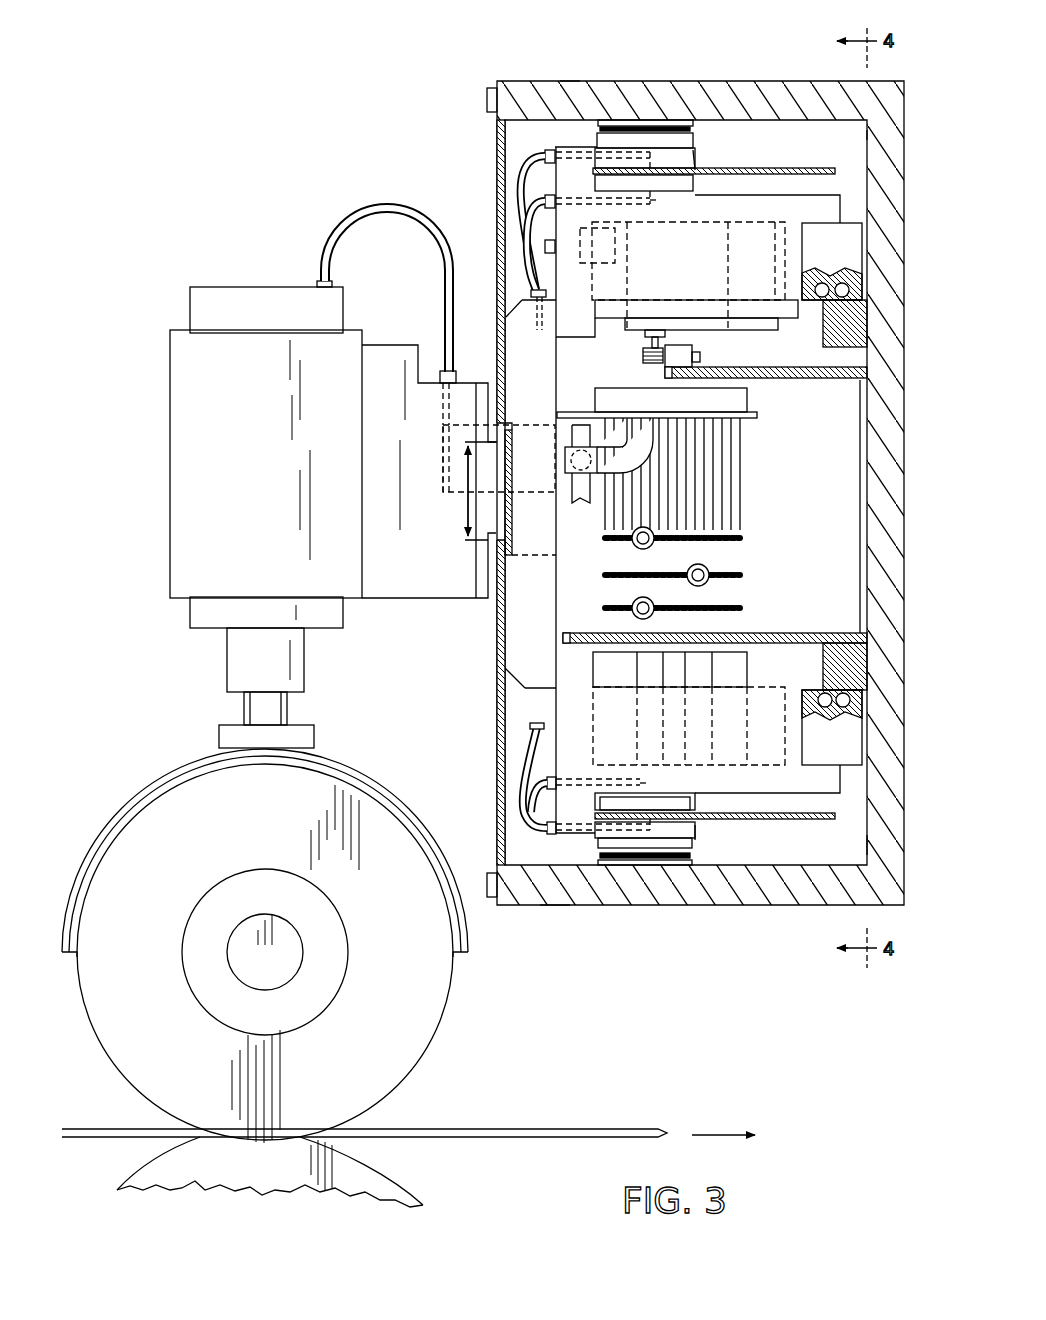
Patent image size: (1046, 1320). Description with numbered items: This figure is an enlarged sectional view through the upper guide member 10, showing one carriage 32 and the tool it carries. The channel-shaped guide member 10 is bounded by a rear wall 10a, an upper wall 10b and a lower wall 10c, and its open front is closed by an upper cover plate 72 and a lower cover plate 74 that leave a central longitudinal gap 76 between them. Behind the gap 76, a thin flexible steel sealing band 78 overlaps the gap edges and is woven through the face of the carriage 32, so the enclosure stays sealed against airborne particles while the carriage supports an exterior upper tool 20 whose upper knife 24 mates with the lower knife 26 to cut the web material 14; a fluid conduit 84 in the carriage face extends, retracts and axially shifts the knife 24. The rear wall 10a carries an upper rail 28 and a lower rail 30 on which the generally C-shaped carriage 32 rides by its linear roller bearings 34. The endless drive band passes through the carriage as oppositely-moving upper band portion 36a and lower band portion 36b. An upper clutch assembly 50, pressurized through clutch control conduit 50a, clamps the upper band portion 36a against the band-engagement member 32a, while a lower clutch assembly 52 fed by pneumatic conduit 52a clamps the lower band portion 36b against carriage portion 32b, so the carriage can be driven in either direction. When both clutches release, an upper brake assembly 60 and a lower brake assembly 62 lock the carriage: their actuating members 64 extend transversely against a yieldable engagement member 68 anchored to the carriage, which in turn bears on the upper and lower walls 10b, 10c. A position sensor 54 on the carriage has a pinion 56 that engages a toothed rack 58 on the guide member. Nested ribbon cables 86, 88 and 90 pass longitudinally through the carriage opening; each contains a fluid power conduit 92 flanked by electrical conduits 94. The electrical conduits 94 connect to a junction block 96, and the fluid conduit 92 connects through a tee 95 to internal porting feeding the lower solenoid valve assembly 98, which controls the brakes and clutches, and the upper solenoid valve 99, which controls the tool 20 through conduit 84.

The upper guide member 10 is at (776, 79).
The rear wall 10a is at (867, 147).
The upper wall 10b is at (568, 80).
The lower wall 10c is at (556, 906).
The web material 14 is at (615, 1129).
The upper tool 20 is at (276, 476).
The upper knife 24 is at (432, 1055).
The lower knife 26 is at (390, 1162).
The upper rail 28 is at (823, 333).
The lower rail 30 is at (821, 660).
The carriage 32 is at (803, 297).
The band-engagement member 32a is at (699, 160).
The carriage portion 32b is at (712, 840).
The linear roller bearing 34 is at (843, 259).
The upper band portion 36a is at (802, 169).
The lower band portion 36b is at (782, 820).
The upper clutch assembly 50 is at (694, 183).
The clutch control conduit 50a is at (651, 201).
The lower clutch assembly 52 is at (697, 802).
The pneumatic conduit 52a is at (641, 788).
The position sensor 54 is at (625, 310).
The pinion 56 is at (643, 363).
The toothed rack 58 is at (693, 362).
The upper brake assembly 60 is at (588, 135).
The lower brake assembly 62 is at (584, 840).
The actuating member 64 is at (660, 120).
The engagement member 68 is at (632, 120).
The upper cover plate 72 is at (497, 202).
The lower cover plate 74 is at (497, 773).
The central longitudinal gap 76 is at (466, 517).
The sealing band 78 is at (566, 545).
The fluid conduit 84 is at (526, 489).
The ribbon cable 86 is at (740, 609).
The ribbon cable 88 is at (735, 574).
The ribbon cable 90 is at (740, 546).
The fluid power conduit 92 is at (617, 488).
The electrical conduits 94 is at (733, 473).
The tee 95 is at (566, 432).
The junction block 96 is at (757, 408).
The lower solenoid valve assembly 98 is at (747, 698).
The upper solenoid valve 99 is at (618, 243).